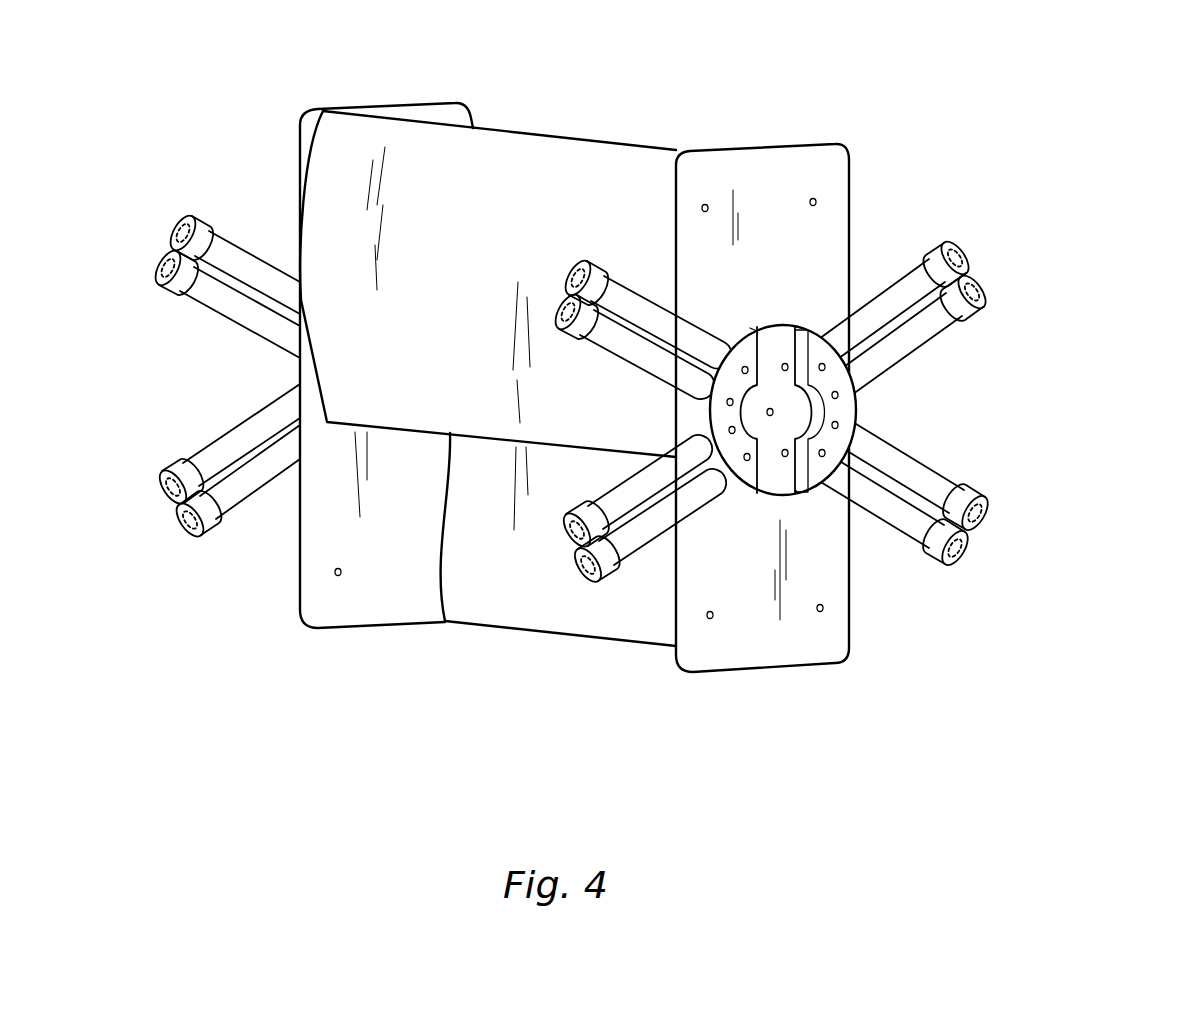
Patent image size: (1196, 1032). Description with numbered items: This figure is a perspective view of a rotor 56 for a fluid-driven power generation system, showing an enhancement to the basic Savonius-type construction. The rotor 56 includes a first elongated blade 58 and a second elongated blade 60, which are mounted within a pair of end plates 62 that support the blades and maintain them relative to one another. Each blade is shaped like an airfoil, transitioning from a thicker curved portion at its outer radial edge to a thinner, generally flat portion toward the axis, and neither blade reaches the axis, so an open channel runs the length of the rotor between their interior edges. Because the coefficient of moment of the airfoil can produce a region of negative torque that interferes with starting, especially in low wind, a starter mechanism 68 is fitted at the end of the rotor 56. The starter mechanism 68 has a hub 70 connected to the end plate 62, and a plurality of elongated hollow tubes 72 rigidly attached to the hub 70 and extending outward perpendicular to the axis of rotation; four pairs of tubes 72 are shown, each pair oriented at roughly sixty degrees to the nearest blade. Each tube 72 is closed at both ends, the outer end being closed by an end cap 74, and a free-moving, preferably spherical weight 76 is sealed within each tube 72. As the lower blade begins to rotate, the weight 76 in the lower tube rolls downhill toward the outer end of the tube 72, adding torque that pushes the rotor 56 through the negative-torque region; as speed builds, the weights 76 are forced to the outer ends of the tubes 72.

The rotor 56 is at (875, 118).
The first elongated blade 58 is at (582, 150).
The second elongated blade 60 is at (513, 618).
The end plate 62 is at (842, 217).
The starter mechanism 68 is at (1034, 342).
The hub 70 is at (825, 412).
The tube 72 is at (902, 503).
The end cap 74 is at (992, 275).
The weight 76 is at (615, 537).